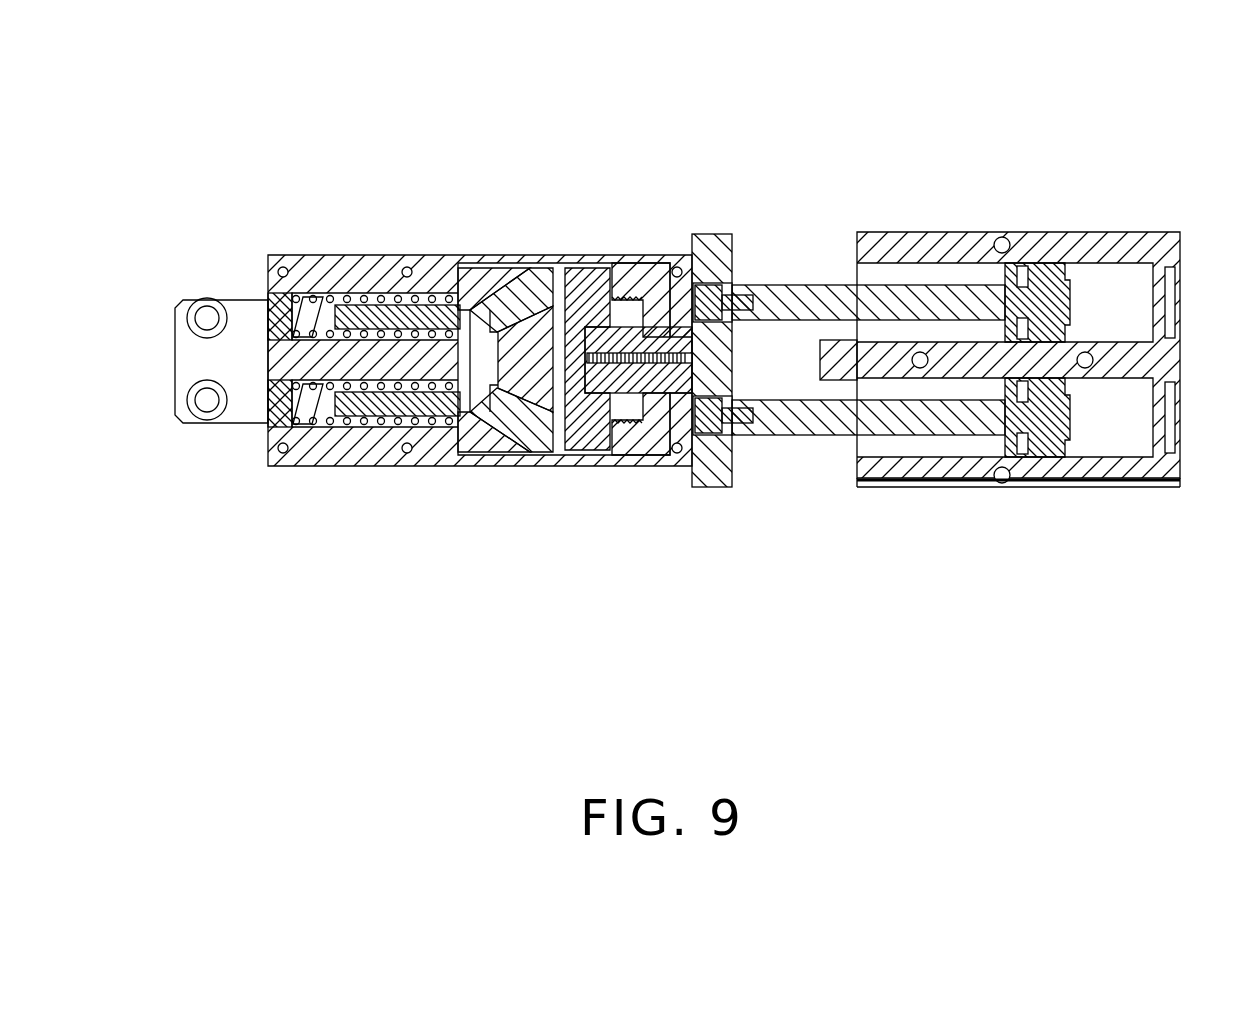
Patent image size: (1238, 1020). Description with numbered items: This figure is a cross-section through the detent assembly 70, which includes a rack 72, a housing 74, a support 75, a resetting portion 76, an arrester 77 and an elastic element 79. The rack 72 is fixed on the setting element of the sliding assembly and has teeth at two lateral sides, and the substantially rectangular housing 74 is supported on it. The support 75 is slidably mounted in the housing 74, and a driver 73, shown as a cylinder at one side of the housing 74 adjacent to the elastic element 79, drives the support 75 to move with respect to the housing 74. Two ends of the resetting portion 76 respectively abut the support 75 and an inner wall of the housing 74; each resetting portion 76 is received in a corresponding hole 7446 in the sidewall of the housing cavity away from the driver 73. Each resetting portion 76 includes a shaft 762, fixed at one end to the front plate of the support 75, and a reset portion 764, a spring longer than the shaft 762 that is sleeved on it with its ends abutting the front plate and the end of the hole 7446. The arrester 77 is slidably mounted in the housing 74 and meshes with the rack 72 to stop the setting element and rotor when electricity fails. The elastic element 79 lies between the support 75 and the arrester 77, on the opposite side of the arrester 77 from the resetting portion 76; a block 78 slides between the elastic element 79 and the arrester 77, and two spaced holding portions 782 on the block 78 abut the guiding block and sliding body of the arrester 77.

The detent assembly 70 is at (688, 71).
The rack 72 is at (210, 364).
The driver 73 is at (1063, 240).
The housing 74 is at (324, 258).
The hole 7446 is at (308, 257).
The support 75 is at (485, 280).
The resetting portion 76 is at (382, 527).
The shaft 762 is at (360, 415).
The reset portion 764 is at (302, 428).
The arrester 77 is at (513, 415).
The block 78 is at (590, 420).
The holding portion 782 is at (563, 418).
The elastic element 79 is at (640, 353).